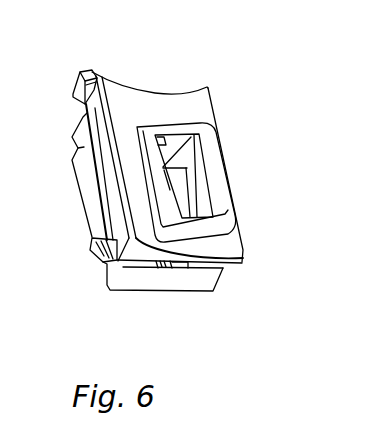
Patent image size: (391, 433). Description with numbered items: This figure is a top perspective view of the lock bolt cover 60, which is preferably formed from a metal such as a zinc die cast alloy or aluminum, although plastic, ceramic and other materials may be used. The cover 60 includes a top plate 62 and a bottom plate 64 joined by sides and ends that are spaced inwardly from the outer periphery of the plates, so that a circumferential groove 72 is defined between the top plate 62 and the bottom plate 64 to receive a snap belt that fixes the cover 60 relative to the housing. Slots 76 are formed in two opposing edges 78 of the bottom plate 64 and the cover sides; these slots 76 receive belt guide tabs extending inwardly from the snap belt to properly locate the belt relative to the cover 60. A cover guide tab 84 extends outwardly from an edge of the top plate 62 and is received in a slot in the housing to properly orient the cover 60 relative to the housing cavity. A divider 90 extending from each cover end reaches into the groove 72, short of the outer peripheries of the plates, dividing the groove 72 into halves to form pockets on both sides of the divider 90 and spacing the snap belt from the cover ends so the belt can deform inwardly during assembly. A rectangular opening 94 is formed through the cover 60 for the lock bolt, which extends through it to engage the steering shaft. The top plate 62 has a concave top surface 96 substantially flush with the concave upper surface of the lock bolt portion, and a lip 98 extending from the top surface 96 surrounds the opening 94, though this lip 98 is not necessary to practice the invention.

The lock bolt cover 60 is at (288, 75).
The top plate 62 is at (244, 253).
The bottom plate 64 is at (218, 280).
The circumferential groove 72 is at (230, 269).
The slots 76 is at (110, 258).
The edges 78 is at (87, 203).
The cover guide tab 84 is at (78, 78).
The divider 90 is at (159, 263).
The rectangular opening 94 is at (197, 192).
The concave top surface 96 is at (135, 115).
The lip 98 is at (213, 152).